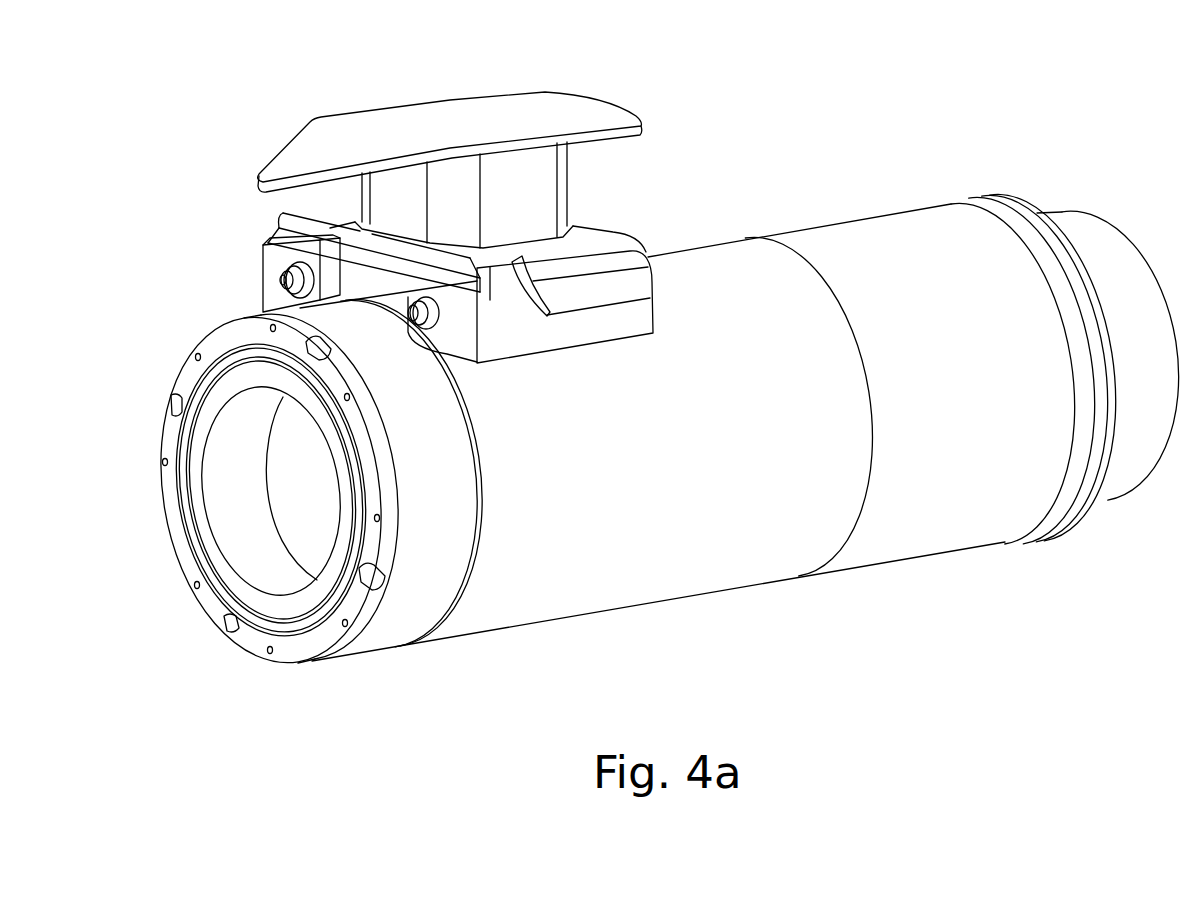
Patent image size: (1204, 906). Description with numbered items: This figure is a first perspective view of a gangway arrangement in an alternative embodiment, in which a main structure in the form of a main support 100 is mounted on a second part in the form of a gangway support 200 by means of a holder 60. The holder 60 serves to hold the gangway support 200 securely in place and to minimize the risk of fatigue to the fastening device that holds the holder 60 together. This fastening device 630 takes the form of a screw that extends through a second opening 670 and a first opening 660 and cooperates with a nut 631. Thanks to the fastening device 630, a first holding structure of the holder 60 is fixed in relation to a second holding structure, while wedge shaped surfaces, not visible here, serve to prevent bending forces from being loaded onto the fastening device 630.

The main support 100 is at (678, 611).
The gangway support 200 is at (579, 96).
The holder 60 is at (612, 227).
The fastening device 630 is at (263, 312).
The nut 631 is at (279, 285).
The first opening 660 is at (278, 238).
The second opening 670 is at (263, 260).